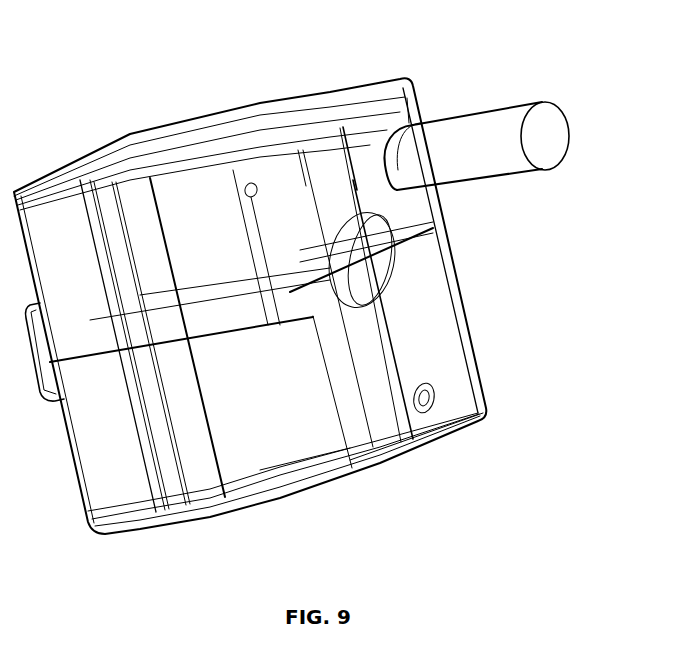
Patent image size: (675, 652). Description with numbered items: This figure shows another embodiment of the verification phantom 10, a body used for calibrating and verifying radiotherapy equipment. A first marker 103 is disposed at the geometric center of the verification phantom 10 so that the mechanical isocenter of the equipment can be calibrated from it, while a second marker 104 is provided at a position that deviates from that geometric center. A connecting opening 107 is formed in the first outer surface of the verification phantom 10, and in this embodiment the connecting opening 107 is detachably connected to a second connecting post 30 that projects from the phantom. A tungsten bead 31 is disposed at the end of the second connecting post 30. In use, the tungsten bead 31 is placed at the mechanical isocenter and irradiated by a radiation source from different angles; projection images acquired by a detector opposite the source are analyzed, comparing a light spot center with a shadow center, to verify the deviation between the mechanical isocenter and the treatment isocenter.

The verification phantom 10 is at (268, 62).
The second connecting post 30 is at (463, 133).
The tungsten bead 31 is at (550, 130).
The first marker 103 is at (257, 309).
The second marker 104 is at (250, 183).
The connecting opening 107 is at (385, 178).